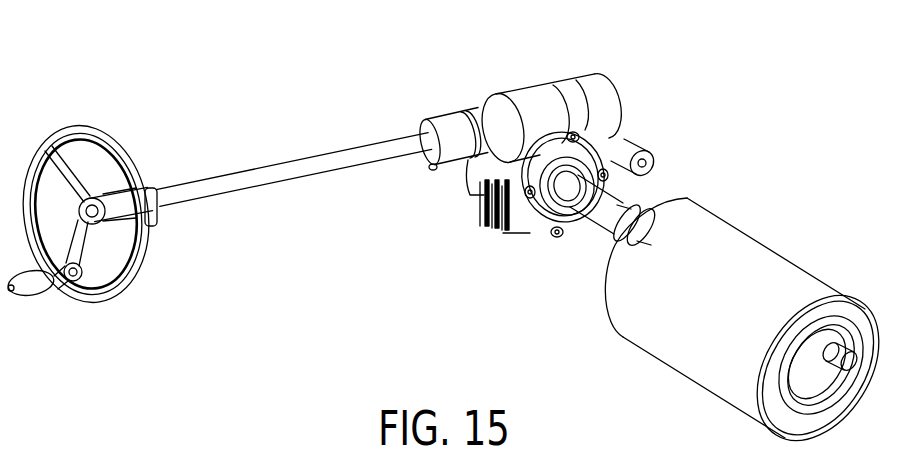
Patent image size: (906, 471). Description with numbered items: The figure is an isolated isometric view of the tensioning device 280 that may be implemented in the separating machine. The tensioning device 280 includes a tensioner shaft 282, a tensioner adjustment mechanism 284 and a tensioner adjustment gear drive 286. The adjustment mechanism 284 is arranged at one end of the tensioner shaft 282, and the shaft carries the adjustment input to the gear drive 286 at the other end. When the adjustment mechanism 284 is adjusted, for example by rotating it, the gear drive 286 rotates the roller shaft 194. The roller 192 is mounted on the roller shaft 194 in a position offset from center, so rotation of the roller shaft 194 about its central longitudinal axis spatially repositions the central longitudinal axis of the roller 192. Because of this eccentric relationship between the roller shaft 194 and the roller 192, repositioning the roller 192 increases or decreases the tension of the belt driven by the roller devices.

The tensioning device 280 is at (290, 119).
The tensioner adjustment mechanism 284 is at (97, 138).
The tensioner shaft 282 is at (260, 178).
The tensioner adjustment gear drive 286 is at (553, 103).
The roller shaft 194 is at (593, 227).
The roller 192 is at (652, 322).